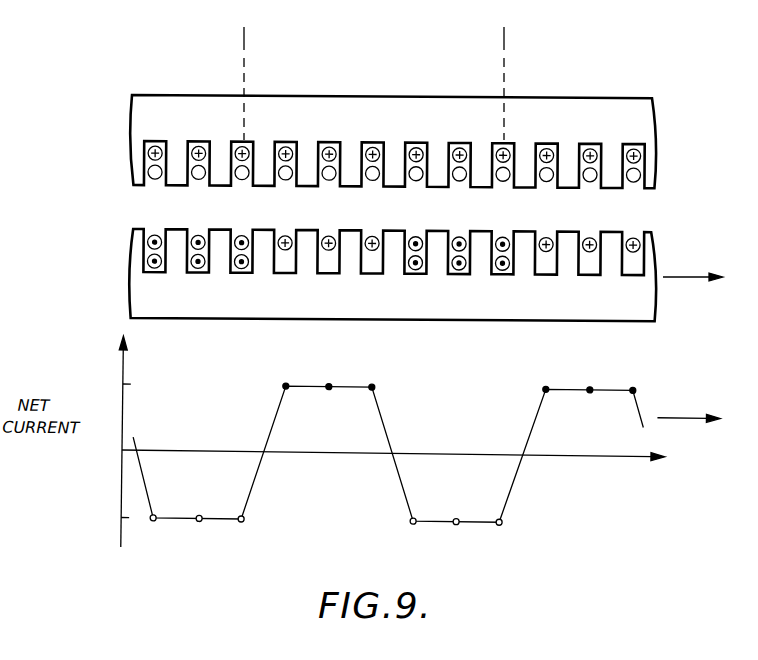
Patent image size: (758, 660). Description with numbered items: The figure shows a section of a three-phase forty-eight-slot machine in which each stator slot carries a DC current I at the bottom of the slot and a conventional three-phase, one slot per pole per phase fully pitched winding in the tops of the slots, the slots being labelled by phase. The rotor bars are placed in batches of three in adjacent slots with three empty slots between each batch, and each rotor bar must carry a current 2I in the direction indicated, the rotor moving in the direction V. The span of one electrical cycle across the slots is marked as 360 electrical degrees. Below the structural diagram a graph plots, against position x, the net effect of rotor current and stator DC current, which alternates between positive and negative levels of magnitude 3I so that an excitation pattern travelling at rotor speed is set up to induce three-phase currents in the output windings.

The DC current I is at (396, 164).
The rotor bar current 2I is at (394, 254).
The net current level 3I is at (359, 455).
The 360 degree electrical pitch 360 is at (504, 42).
The velocity direction V is at (700, 349).
The position axis x is at (404, 454).